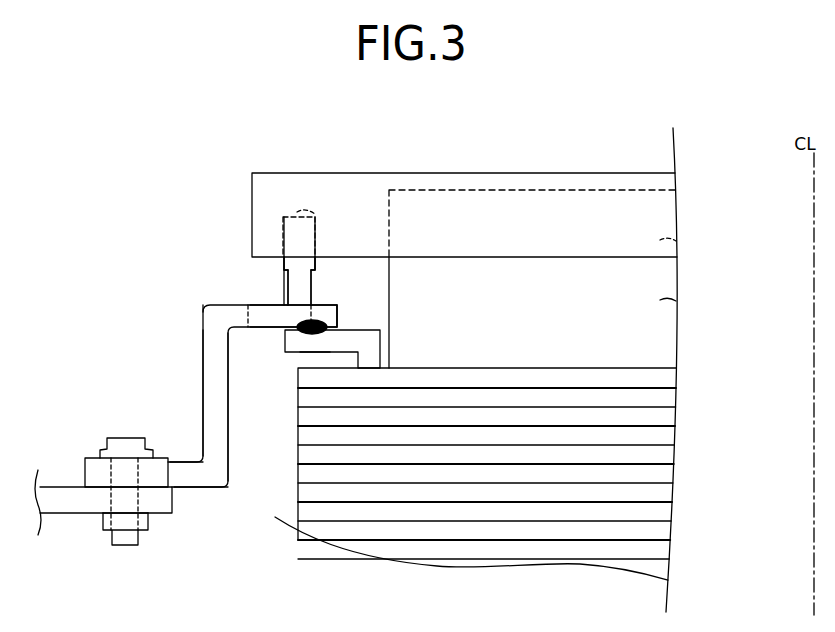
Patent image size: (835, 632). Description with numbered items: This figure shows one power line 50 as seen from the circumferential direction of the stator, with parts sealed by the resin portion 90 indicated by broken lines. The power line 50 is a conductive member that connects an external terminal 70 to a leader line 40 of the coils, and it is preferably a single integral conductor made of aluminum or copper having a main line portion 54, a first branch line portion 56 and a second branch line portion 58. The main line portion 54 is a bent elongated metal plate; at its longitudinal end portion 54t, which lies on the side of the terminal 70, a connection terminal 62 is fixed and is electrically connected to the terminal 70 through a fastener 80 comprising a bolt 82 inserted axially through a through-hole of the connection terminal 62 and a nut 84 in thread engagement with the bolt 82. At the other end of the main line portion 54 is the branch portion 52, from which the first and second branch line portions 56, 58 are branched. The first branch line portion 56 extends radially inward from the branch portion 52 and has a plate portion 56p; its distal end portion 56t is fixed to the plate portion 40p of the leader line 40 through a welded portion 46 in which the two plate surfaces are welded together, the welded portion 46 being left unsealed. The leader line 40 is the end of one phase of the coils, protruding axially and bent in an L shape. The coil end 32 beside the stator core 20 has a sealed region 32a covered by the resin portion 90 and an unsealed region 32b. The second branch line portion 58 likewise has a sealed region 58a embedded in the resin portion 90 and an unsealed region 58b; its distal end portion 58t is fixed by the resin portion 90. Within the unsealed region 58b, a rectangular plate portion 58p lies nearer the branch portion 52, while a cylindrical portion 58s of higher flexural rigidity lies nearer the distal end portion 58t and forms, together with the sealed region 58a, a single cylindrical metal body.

The stator core 20 is at (678, 468).
The coil end 32 is at (741, 235).
The sealed region 32a is at (658, 249).
The unsealed region 32b is at (658, 312).
The leader line 40 is at (373, 349).
The plate portion 40p is at (313, 351).
The welded portion 46 is at (305, 336).
The power line 50 is at (114, 330).
The branch portion 52 is at (250, 301).
The main line portion 54 is at (208, 385).
The longitudinal end portion 54t is at (160, 485).
The first branch line portion 56 is at (276, 328).
The plate portion 56p is at (312, 316).
The distal end portion 56t is at (338, 313).
The second branch line portion 58 is at (140, 175).
The sealed region 58a is at (283, 240).
The unsealed region 58b is at (190, 218).
The cylindrical portion 58s is at (293, 265).
The plate portion 58p is at (293, 293).
The distal end portion 58t is at (297, 213).
The connection terminal 62 is at (158, 468).
The terminal 70 is at (66, 510).
The fastener 80 is at (187, 583).
The bolt 82 is at (100, 445).
The nut 84 is at (145, 525).
The resin portion 90 is at (365, 183).